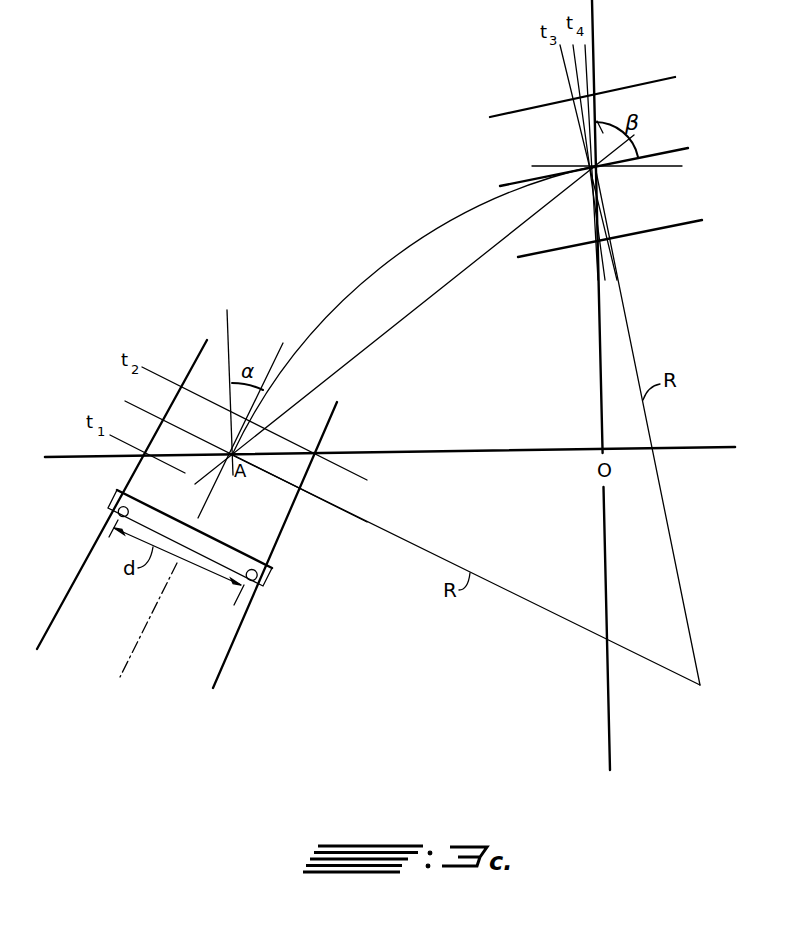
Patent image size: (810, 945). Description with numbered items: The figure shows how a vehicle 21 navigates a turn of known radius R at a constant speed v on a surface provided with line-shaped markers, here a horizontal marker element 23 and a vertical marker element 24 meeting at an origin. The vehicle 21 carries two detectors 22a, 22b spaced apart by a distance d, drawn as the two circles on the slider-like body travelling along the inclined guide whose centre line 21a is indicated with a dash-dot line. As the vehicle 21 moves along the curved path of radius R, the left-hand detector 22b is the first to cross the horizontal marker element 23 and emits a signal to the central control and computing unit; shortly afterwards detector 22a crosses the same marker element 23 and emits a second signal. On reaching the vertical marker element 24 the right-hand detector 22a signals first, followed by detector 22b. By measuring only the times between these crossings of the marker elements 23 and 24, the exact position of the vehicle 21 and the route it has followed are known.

The vehicle 21 is at (236, 630).
The center line of guide 21a is at (133, 647).
The detector 22a is at (262, 579).
The detector 22b is at (118, 508).
The horizontal line-shaped marker element 23 is at (460, 448).
The vertical marker element 24 is at (598, 335).